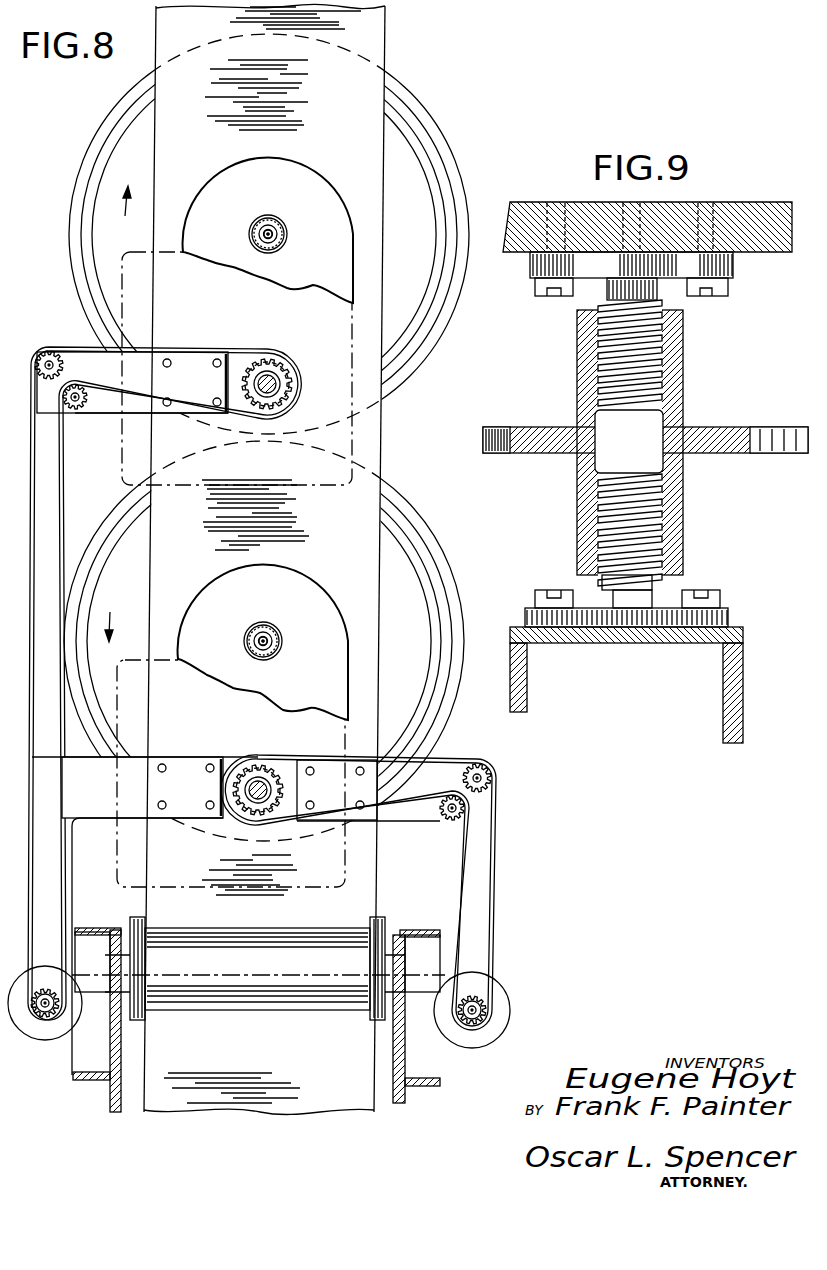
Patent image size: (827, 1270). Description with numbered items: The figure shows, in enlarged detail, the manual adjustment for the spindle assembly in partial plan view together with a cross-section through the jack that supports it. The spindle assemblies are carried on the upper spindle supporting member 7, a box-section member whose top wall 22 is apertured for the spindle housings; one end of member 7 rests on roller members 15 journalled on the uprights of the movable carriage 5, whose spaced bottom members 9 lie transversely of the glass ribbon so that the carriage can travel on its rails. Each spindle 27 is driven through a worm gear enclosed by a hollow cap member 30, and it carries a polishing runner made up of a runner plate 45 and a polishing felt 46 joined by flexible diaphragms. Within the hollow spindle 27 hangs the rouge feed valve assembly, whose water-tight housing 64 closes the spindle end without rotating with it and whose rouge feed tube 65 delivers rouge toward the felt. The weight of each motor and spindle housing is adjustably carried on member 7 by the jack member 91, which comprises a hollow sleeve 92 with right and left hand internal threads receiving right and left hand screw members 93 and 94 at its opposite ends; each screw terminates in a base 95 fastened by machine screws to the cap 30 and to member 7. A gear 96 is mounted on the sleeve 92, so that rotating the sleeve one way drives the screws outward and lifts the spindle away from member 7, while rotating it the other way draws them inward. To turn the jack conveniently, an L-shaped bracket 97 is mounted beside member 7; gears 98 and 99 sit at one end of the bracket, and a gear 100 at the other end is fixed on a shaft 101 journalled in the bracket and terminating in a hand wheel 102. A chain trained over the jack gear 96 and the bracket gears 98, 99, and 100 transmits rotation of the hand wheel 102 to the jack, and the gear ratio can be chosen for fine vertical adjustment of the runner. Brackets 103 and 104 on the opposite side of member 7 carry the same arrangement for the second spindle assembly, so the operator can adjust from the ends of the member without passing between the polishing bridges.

In FIG. 8, the movable carriage 5 is at (112, 1088).
In FIG. 8, the upper spindle supporting member 7 is at (382, 466).
In FIG. 9, the upper spindle supporting member 7 is at (742, 665).
In FIG. 8, the bottom members 9 is at (190, 835).
In FIG. 8, the roller members 15 is at (270, 996).
In FIG. 9, the top wall 22 is at (732, 627).
In FIG. 8, the spindle 27 is at (270, 226).
In FIG. 8, the hollow cap member 30 is at (330, 176).
In FIG. 9, the hollow cap member 30 is at (752, 238).
In FIG. 8, the runner plate 45 is at (412, 168).
In FIG. 8, the polishing felt 46 is at (398, 85).
In FIG. 8, the water-tight housing 64 is at (281, 232).
In FIG. 8, the rouge feed tube 65 is at (274, 237).
In FIG. 8, the jack member 91 is at (278, 372).
In FIG. 9, the jack member 91 is at (577, 364).
In FIG. 9, the hollow sleeve 92 is at (684, 369).
In FIG. 9, the right hand screw member 93 is at (652, 323).
In FIG. 9, the left hand screw member 94 is at (660, 512).
In FIG. 9, the base 95 is at (533, 262).
In FIG. 9, the gear 96 is at (530, 455).
In FIG. 8, the L-shaped bracket 97 is at (408, 822).
In FIG. 8, the gear 98 is at (48, 350).
In FIG. 8, the gear 99 is at (78, 388).
In FIG. 8, the gear 100 is at (476, 1010).
In FIG. 8, the shaft 101 is at (482, 1000).
In FIG. 8, the hand wheel 102 is at (509, 1022).
In FIG. 8, the bracket 103 is at (91, 820).
In FIG. 8, the bracket 104 is at (100, 418).